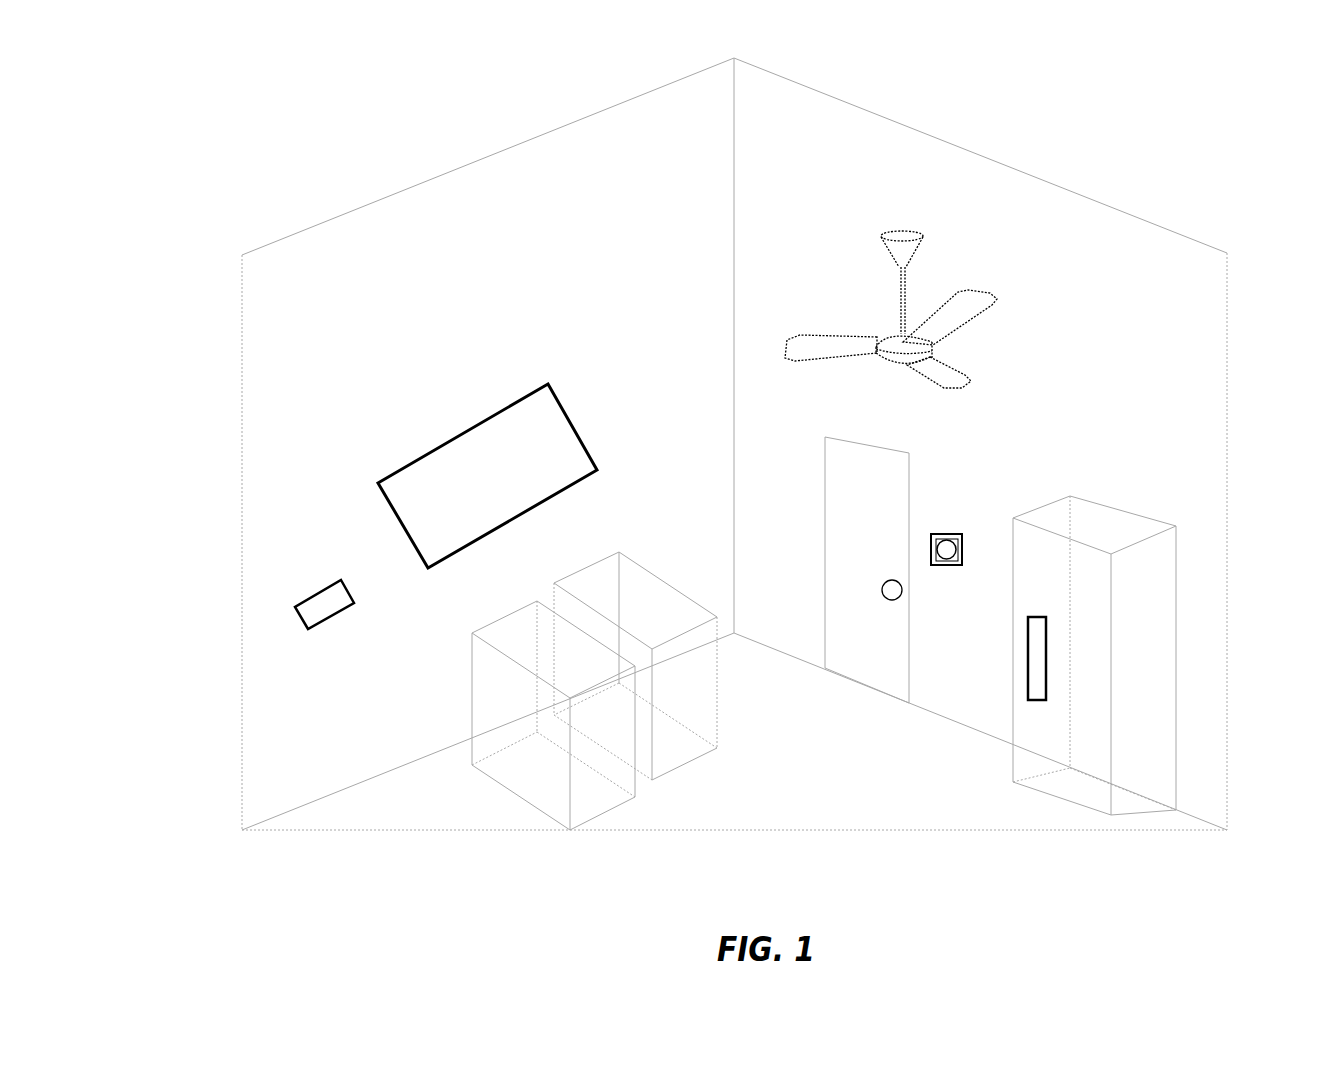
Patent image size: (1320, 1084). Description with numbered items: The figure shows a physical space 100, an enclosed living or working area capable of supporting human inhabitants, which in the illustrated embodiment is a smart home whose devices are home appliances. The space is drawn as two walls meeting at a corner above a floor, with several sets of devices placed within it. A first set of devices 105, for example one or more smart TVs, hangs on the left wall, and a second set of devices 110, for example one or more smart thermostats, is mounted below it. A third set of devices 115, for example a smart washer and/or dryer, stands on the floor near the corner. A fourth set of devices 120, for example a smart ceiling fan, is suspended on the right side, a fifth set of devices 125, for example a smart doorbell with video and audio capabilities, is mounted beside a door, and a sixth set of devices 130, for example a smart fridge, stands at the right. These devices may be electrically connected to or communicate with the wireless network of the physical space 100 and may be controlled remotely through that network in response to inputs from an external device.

The physical space 100 is at (387, 73).
The first set of devices 105 is at (467, 410).
The second set of devices 110 is at (317, 578).
The third set of devices 115 is at (607, 525).
The fourth set of devices 120 is at (878, 196).
The fifth set of devices 125 is at (952, 512).
The sixth set of devices 130 is at (1115, 495).